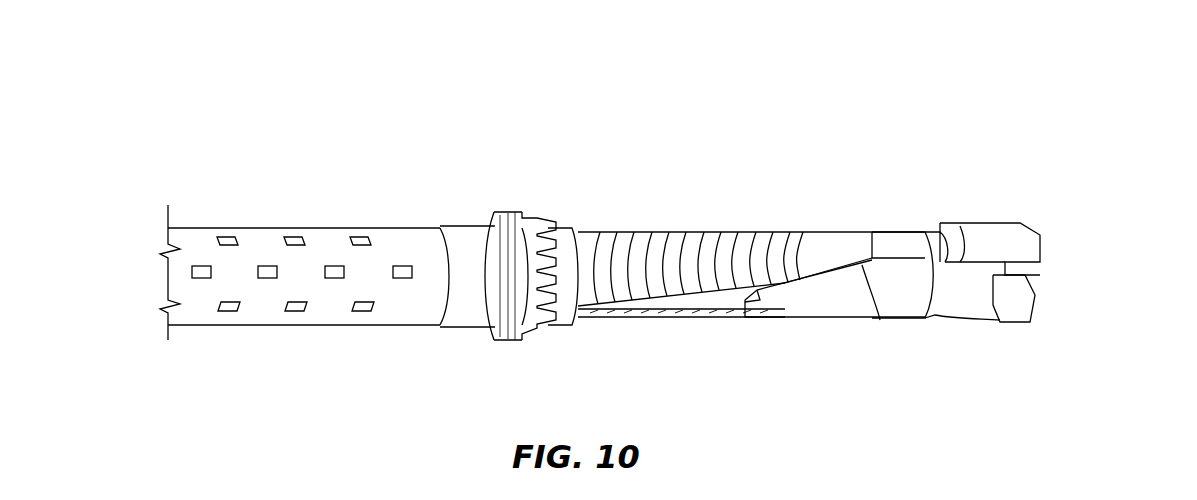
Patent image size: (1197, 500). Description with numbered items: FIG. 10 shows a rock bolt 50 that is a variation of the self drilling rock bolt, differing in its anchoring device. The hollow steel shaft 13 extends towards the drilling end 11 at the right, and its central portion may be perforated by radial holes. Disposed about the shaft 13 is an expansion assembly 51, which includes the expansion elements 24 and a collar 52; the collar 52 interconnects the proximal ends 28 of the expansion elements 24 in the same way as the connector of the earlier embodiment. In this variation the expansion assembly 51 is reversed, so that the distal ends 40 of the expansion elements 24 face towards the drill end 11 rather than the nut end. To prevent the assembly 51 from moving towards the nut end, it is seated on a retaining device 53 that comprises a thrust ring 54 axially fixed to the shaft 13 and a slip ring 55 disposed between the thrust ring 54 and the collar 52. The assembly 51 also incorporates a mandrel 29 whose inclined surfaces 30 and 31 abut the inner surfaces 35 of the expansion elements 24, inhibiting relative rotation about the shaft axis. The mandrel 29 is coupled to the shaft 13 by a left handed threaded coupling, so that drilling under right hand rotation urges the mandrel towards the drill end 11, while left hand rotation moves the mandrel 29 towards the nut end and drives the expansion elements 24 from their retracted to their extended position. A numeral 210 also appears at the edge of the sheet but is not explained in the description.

The shaft 13 is at (317, 195).
The rock bolt 50 is at (746, 110).
The retaining device 53 is at (545, 193).
The expansion assembly 51 is at (762, 193).
The first (drilling) end 11 is at (1015, 190).
The proximal ends 28 is at (603, 243).
The expansion elements 24 is at (662, 244).
The distal ends 40 is at (784, 243).
The inner surfaces 35 is at (843, 240).
The inclined surface 30 is at (865, 237).
The thrust ring 54 is at (473, 312).
The slip ring 55 is at (516, 305).
The collar 52 is at (555, 305).
The mandrel 29 is at (848, 318).
The inclined surface 31 is at (868, 268).
The component 210 is at (749, 499).